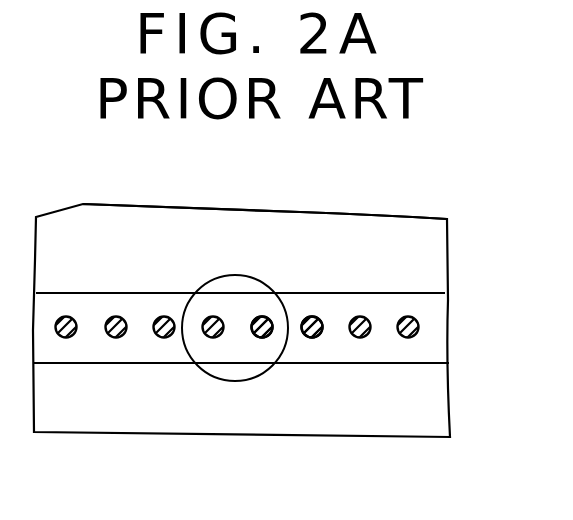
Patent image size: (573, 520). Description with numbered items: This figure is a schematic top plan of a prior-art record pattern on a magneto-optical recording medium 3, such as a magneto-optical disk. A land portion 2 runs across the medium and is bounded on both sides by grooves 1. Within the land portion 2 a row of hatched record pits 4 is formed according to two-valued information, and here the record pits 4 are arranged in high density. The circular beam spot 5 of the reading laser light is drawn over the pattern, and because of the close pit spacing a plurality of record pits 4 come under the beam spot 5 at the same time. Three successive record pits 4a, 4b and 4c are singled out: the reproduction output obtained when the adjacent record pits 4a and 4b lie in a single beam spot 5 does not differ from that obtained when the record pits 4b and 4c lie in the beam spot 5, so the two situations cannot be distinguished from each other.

The groove 1 is at (430, 260).
The land portion 2 is at (433, 330).
The magneto-optical recording medium 3 is at (403, 233).
The record pits 4 is at (358, 338).
The record pit 4a is at (213, 316).
The record pit 4b is at (262, 316).
The record pit 4c is at (319, 316).
The beam spot 5 is at (222, 381).